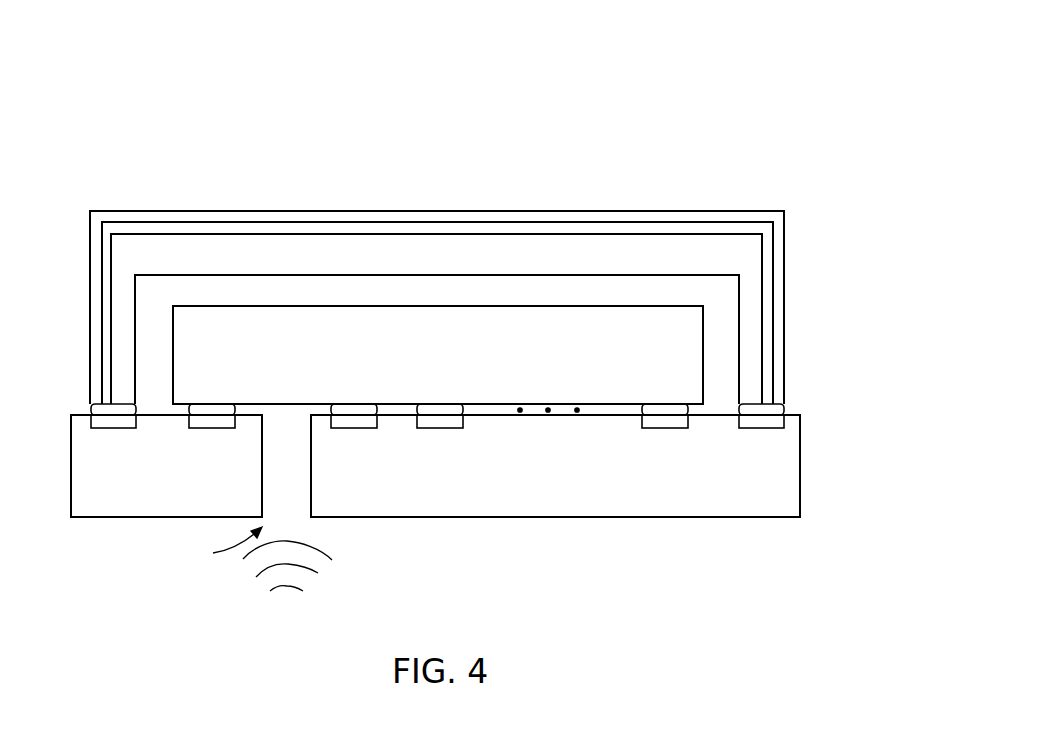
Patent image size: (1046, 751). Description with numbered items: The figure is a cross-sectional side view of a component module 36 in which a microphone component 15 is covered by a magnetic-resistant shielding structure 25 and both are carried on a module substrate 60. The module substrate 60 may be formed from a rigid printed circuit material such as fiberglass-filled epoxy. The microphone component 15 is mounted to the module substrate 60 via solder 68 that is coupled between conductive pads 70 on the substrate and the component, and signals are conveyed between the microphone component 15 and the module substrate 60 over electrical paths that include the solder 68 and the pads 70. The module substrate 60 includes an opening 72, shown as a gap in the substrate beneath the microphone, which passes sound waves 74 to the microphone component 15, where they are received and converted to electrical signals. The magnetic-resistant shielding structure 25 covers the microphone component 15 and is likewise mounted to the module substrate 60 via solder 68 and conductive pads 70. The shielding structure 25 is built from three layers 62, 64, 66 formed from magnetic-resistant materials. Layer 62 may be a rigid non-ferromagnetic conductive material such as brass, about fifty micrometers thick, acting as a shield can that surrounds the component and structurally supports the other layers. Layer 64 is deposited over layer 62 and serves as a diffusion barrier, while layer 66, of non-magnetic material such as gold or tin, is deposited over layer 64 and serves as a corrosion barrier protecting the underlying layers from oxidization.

The component module 36 is at (767, 80).
The magnetic-resistant shielding structure 25 is at (808, 277).
The microphone component 15 is at (704, 347).
The module substrate 60 is at (802, 486).
The layer 62 is at (456, 250).
The layer 64 is at (522, 228).
The layer 66 is at (592, 218).
The solder 68 is at (90, 408).
The conductive pads 70 is at (108, 430).
The opening 72 is at (220, 546).
The sound waves 74 is at (313, 565).